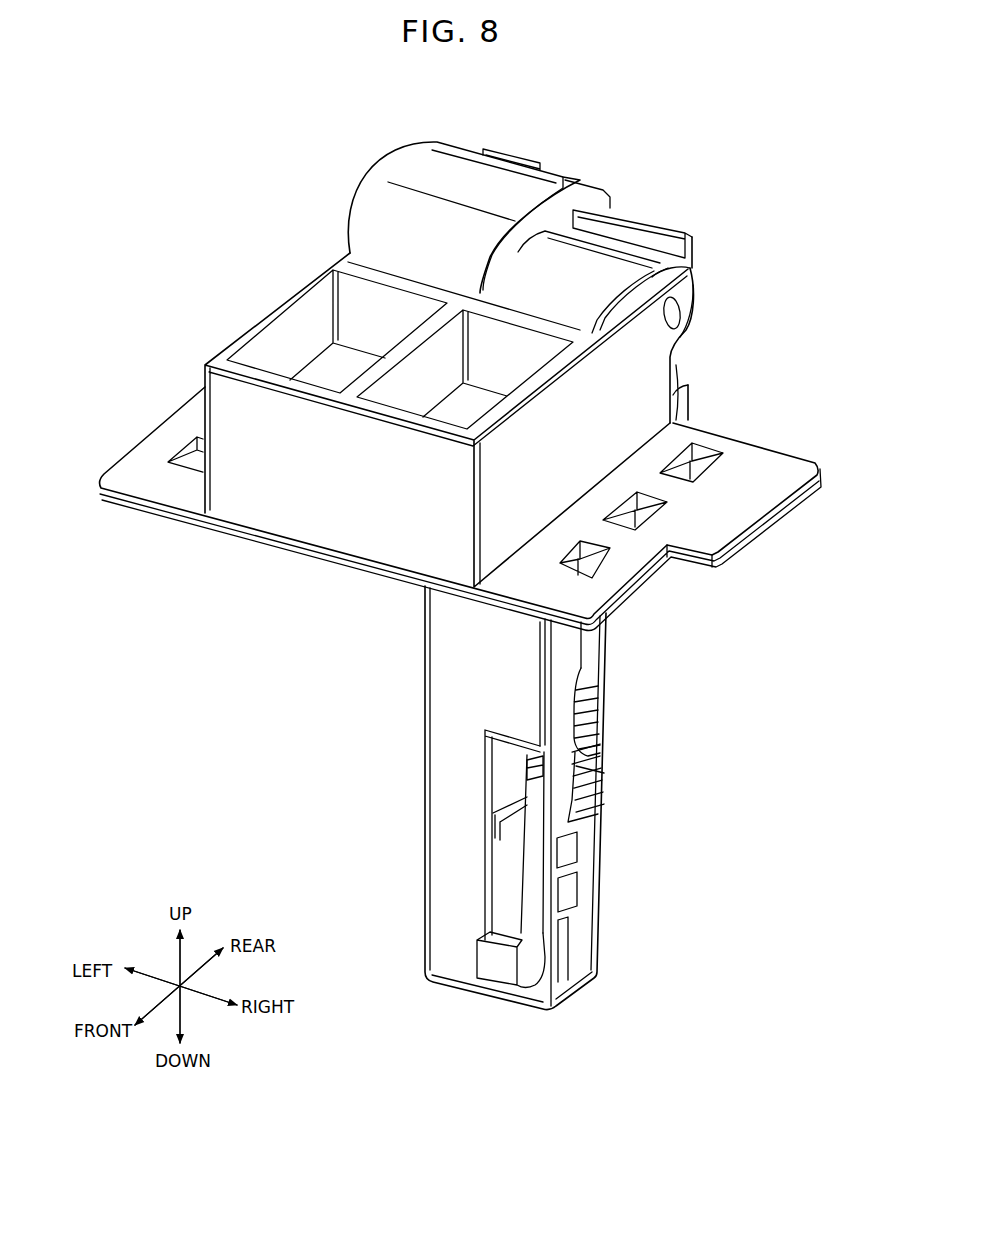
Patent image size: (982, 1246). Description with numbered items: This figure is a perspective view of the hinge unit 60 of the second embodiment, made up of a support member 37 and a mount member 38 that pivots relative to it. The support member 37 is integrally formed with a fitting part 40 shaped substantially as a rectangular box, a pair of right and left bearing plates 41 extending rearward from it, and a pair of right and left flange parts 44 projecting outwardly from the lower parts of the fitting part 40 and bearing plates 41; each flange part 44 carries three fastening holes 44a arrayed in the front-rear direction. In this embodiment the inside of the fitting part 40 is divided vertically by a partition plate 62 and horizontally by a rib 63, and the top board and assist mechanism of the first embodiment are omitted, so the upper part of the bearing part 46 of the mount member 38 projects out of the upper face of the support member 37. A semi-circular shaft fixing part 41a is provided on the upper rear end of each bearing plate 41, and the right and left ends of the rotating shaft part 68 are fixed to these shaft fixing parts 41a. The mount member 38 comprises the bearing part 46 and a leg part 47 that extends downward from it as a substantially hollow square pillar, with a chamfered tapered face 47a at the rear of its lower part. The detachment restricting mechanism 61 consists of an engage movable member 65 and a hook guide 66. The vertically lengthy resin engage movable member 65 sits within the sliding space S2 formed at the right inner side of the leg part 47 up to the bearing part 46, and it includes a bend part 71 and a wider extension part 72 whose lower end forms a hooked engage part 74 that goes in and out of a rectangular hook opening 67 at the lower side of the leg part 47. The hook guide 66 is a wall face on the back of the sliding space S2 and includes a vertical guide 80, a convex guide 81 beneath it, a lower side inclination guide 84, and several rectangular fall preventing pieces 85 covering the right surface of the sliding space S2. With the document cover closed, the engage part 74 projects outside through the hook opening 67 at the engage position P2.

The support member 37 is at (792, 404).
The mount member 38 is at (383, 620).
The fitting part 40 is at (289, 276).
The bearing plate 41 is at (660, 369).
The shaft fixing part 41a is at (683, 340).
The flange part 44 is at (748, 533).
The fastening hole 44a is at (593, 550).
The bearing part 46 is at (623, 187).
The leg part 47 is at (438, 650).
The tapered face 47a is at (603, 918).
The hinge unit 60 is at (362, 134).
The detachment restricting mechanism 61 is at (684, 841).
The partition plate 62 is at (332, 375).
The rib 63 is at (392, 360).
The engage movable member 65 is at (493, 867).
The hook guide 66 is at (587, 814).
The hook opening 67 is at (483, 746).
The rotating shaft part 68 is at (683, 309).
The bend part 71 is at (540, 776).
The extension part 72 is at (500, 893).
The engage part 74 is at (487, 953).
The vertical guide 80 is at (593, 648).
The convex guide 81 is at (605, 773).
The lower side inclination guide 84 is at (560, 967).
The fall preventing piece 85 is at (601, 720).
The sliding space S2 is at (506, 773).
The engage position P2 is at (466, 973).